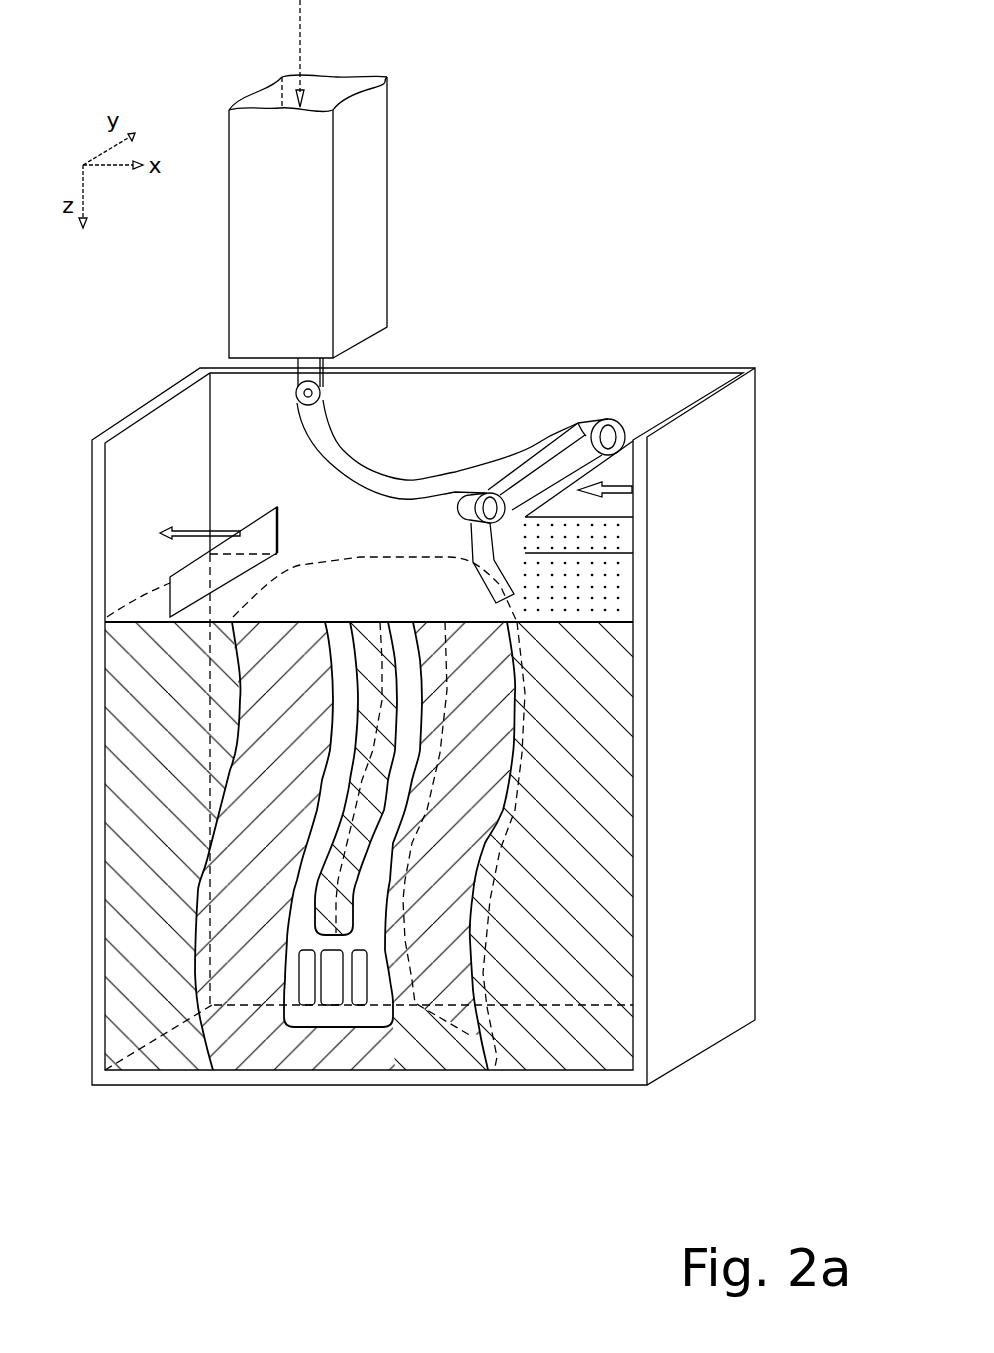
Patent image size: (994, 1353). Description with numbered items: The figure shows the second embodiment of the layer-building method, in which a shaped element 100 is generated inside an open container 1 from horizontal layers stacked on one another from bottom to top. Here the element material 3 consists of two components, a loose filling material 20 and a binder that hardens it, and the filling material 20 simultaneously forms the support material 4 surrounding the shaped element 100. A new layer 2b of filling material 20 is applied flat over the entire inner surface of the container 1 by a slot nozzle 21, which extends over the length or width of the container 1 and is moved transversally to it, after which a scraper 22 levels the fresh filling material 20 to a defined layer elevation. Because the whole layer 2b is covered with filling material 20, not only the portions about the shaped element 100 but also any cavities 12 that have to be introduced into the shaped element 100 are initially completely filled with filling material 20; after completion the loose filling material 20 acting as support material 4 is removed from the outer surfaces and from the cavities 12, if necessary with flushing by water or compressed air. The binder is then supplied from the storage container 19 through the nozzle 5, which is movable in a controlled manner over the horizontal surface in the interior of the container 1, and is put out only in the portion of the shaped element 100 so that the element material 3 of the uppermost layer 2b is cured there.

The container 1 is at (423, 726).
The layer 2b is at (290, 568).
The element material 3 is at (310, 846).
The support material 4 is at (513, 846).
The nozzle 5 is at (490, 573).
The cavities 12 is at (370, 1105).
The storage container 19 is at (308, 179).
The filling material 20 is at (162, 619).
The slot nozzle 21 is at (622, 476).
The scraper 22 is at (264, 528).
The shaped element 100 is at (369, 596).